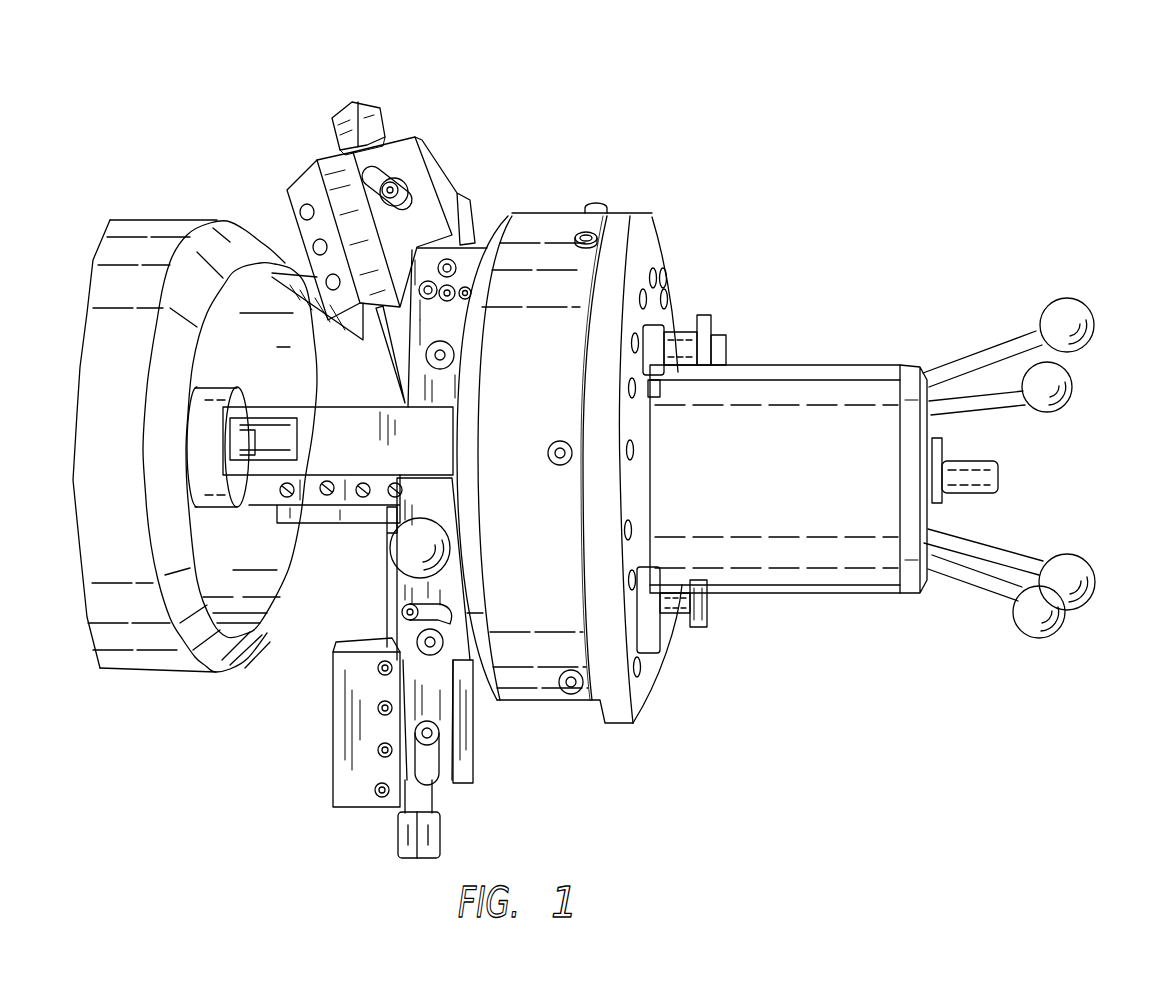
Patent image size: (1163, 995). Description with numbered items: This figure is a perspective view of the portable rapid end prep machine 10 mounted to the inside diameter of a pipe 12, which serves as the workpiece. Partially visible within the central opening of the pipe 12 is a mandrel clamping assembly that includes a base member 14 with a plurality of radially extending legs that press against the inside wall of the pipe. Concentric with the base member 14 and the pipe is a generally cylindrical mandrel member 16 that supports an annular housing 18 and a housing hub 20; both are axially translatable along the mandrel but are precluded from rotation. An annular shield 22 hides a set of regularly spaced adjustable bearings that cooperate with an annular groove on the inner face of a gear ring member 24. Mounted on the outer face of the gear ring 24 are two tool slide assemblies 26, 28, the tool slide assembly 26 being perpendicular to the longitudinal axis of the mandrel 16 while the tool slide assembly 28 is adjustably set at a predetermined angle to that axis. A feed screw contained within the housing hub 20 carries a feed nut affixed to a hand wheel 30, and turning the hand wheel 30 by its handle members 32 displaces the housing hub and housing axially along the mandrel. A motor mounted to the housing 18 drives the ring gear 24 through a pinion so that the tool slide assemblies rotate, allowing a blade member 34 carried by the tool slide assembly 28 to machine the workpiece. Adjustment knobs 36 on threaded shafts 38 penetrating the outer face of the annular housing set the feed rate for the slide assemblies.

The portable rapid end prep machine 10 is at (799, 625).
The pipe 12 is at (193, 240).
The base member 14 is at (213, 400).
The cylindrical mandrel member 16 is at (364, 450).
The annular housing 18 is at (623, 220).
The housing hub 20 is at (781, 503).
The annular shield 22 is at (536, 412).
The gear ring member 24 is at (500, 235).
The tool slide assembly 26 is at (333, 741).
The tool slide assembly 28 is at (400, 152).
The hand wheel 30 is at (912, 368).
The handle members 32 is at (1073, 405).
The blade member 34 is at (290, 268).
The adjustment knobs 36 is at (710, 625).
The threaded shafts 38 is at (670, 618).